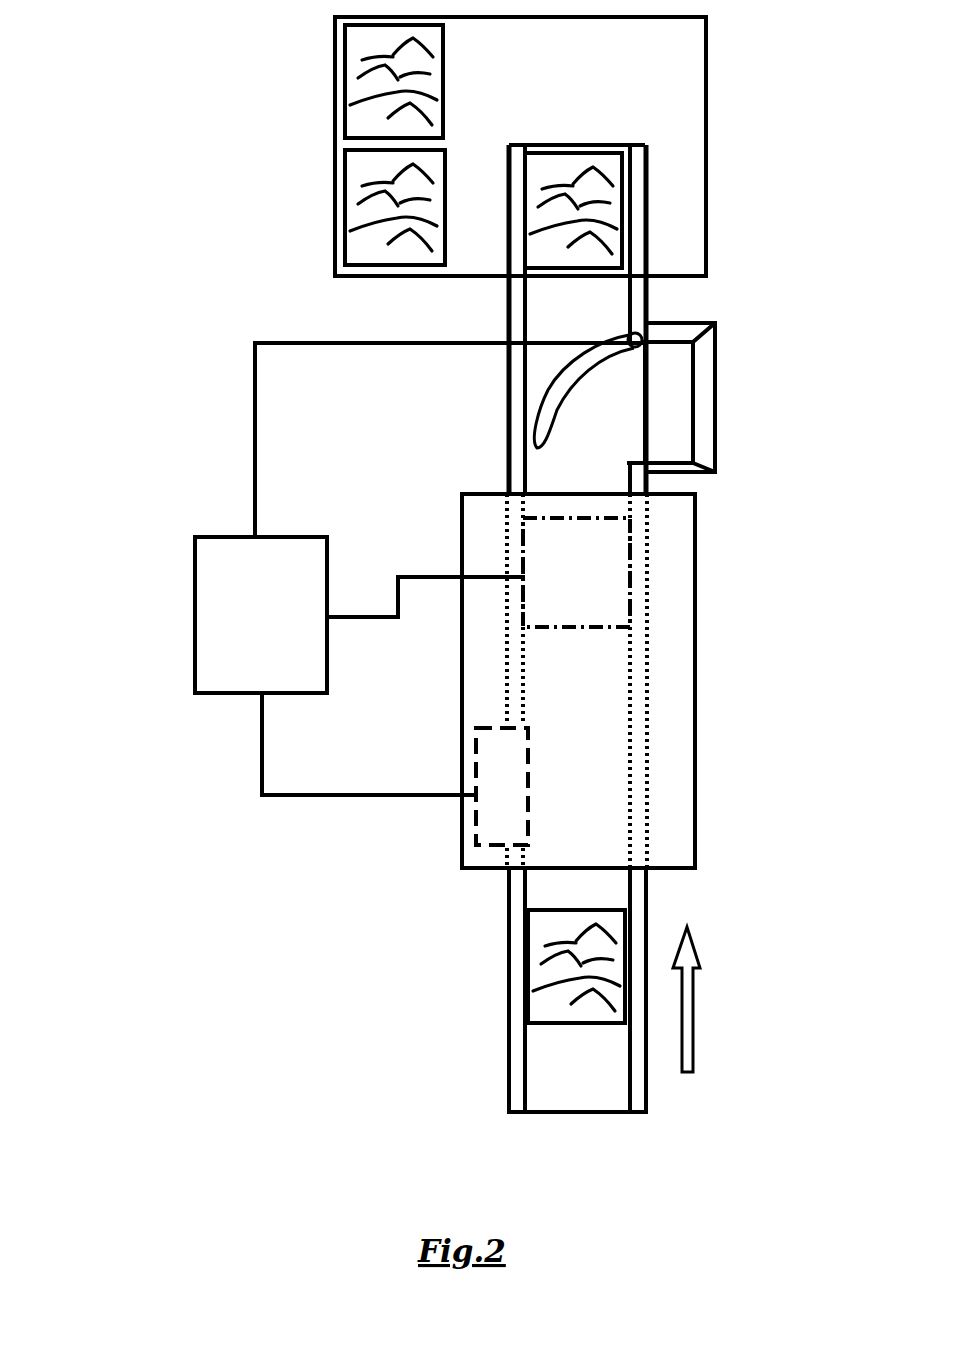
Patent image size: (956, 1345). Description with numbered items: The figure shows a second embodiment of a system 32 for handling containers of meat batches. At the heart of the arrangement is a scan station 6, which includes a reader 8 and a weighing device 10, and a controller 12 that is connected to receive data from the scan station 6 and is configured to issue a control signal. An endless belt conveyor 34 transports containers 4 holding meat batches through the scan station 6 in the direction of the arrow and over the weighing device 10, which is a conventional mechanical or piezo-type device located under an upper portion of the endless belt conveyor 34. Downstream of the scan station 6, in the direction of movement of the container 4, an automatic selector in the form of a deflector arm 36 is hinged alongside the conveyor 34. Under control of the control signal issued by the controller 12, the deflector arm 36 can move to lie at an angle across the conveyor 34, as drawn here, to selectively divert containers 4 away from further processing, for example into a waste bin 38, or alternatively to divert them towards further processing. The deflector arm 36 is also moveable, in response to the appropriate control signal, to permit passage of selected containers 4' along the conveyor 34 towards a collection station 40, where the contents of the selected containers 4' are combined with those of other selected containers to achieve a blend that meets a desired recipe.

The system 32 is at (139, 385).
The collection station 40 is at (707, 105).
The selected container 4' is at (446, 146).
The endless belt conveyor 34 is at (507, 415).
The controller 12 is at (419, 569).
The waste bin 38 is at (715, 420).
The deflector arm 36 is at (567, 395).
The scan station 6 is at (695, 765).
The weighing device 10 is at (576, 572).
The reader 8 is at (502, 786).
The container 4 is at (510, 999).